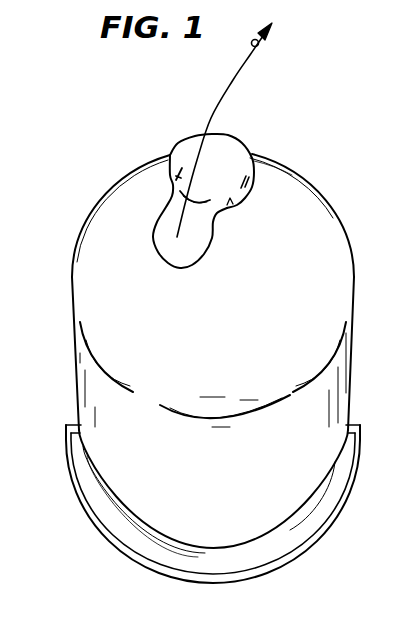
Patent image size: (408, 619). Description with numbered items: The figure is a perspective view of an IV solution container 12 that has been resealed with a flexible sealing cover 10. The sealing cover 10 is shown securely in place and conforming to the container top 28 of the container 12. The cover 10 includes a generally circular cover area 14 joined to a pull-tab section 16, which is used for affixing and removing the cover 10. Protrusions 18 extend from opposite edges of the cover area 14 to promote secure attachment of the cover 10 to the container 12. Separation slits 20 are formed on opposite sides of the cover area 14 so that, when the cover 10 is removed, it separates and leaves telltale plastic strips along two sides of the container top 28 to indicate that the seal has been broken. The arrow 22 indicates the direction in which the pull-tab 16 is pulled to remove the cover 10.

The sealing cover 10 is at (230, 170).
The IV solution container 12 is at (222, 474).
The cover area 14 is at (184, 138).
The pull-tab section 16 is at (190, 259).
The protrusions 18 is at (175, 147).
The separation slits 20 is at (172, 179).
The arrow 22 is at (234, 82).
The container top 28 is at (243, 205).